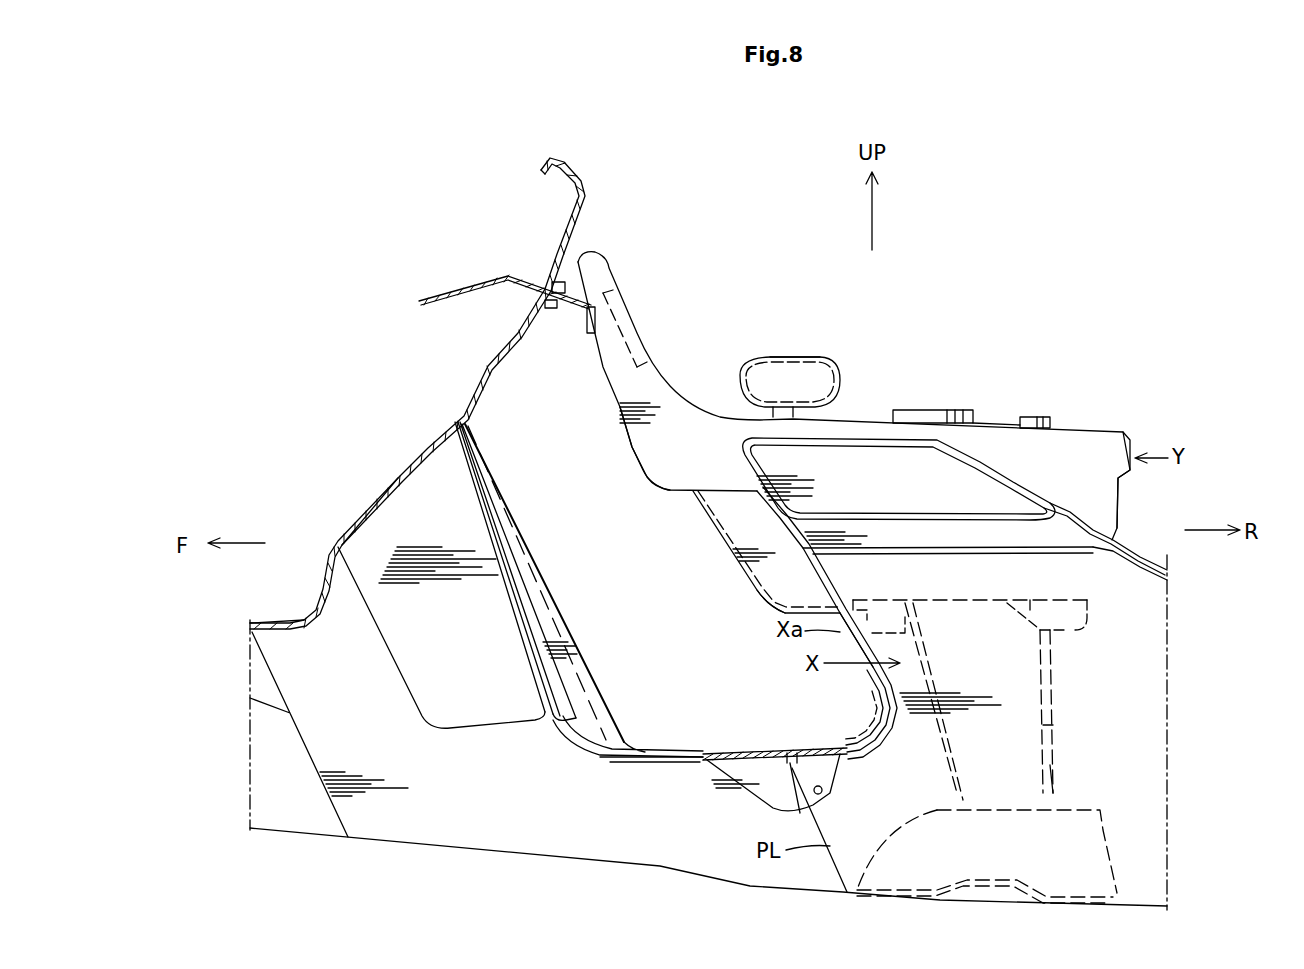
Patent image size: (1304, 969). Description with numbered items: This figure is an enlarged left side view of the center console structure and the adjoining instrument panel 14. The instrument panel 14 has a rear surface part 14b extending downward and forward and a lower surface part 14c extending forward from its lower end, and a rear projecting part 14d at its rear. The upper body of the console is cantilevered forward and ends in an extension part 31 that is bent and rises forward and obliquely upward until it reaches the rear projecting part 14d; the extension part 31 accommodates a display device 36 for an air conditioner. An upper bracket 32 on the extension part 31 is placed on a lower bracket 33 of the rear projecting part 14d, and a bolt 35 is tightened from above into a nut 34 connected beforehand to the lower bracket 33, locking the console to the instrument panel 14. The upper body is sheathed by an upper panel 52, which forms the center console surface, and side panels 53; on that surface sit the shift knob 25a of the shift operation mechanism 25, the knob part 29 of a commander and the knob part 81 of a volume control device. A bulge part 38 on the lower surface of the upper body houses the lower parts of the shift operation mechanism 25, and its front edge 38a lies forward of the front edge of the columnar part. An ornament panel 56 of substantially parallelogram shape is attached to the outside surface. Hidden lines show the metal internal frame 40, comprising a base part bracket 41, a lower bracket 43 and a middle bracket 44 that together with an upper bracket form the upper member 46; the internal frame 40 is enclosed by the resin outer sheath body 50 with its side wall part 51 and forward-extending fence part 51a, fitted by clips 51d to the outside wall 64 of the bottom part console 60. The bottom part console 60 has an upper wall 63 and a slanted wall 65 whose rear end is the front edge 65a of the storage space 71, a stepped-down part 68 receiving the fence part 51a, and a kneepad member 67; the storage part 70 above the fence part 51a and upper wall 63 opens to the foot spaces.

The instrument panel 14 is at (475, 370).
The rear surface part 14b is at (396, 471).
The lower surface part 14c is at (278, 620).
The rear projecting part 14d is at (578, 226).
The shift operation mechanism 25 is at (764, 341).
The shift knob 25a is at (795, 366).
The knob part 29 is at (913, 410).
The extension part 31 is at (610, 380).
The upper bracket 32 is at (585, 320).
The lower bracket 33 is at (472, 283).
The nut 34 is at (544, 303).
The bolt 35 is at (553, 282).
The display device 36 is at (617, 307).
The bulge part 38 is at (693, 538).
The front edge of bulge part 38a is at (733, 574).
The internal frame 40 is at (1079, 704).
The base part bracket 41 is at (1103, 830).
The lower bracket 43 is at (1055, 766).
The middle bracket 44 is at (966, 600).
The upper member 46 is at (1066, 731).
The outer sheath body 50 is at (1136, 542).
The side wall part 51 is at (1160, 620).
The fence part 51a is at (806, 750).
The clip 51d is at (823, 796).
The upper panel 52 is at (990, 425).
The side panel 53 is at (1105, 486).
The ornament panel 56 is at (885, 486).
The bottom part console 60 is at (517, 875).
The upper wall 63 is at (675, 740).
The outside wall 64 is at (592, 848).
The slanted wall 65 is at (525, 553).
The front edge of storage space 65a is at (578, 650).
The kneepad member 67 is at (458, 636).
The stepped-down part 68 is at (822, 753).
The storage part 70 is at (850, 623).
The storage space 71 is at (665, 620).
The knob part 81 is at (1040, 415).